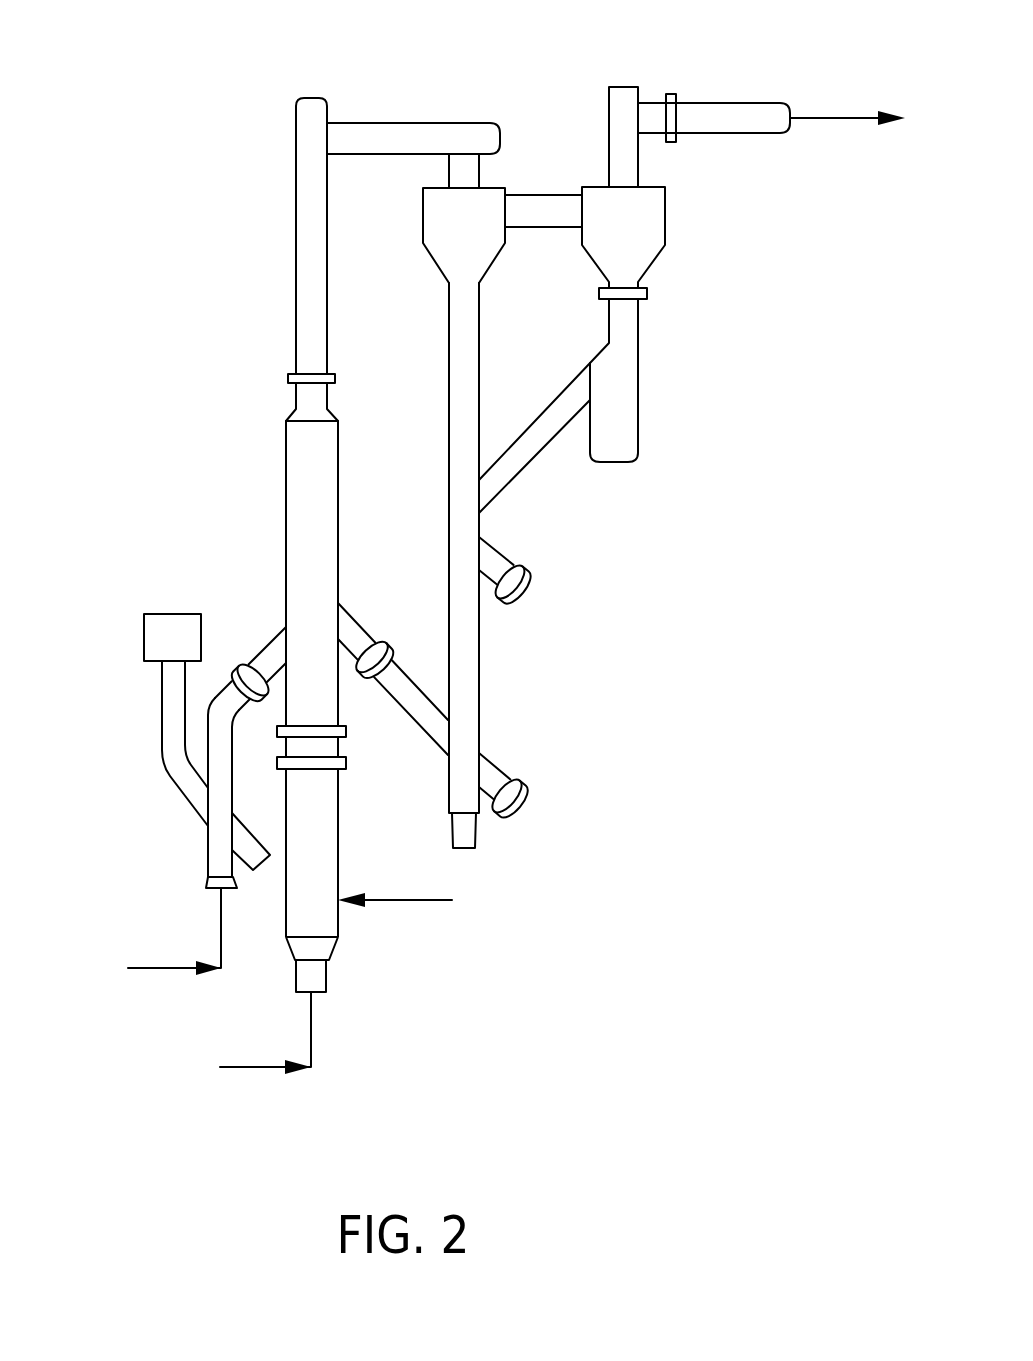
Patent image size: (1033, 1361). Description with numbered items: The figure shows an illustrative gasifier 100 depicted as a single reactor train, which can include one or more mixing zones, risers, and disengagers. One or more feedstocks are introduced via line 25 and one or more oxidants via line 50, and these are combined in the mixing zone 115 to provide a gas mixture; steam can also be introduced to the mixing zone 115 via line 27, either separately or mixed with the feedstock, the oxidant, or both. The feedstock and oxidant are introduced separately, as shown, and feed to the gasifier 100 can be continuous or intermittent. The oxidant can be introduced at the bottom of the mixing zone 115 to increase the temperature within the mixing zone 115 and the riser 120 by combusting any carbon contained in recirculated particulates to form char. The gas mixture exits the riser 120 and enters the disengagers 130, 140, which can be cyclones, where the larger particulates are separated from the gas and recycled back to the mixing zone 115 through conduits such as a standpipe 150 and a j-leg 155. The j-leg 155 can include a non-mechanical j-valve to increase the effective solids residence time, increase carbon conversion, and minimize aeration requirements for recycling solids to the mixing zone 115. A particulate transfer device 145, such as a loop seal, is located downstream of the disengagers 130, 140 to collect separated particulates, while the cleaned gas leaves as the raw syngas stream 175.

The gasifier 100 is at (134, 119).
The mixing zone 115 is at (310, 496).
The riser 120 is at (312, 97).
The disengager 130 is at (480, 241).
The disengager 140 is at (665, 209).
The particulate transfer device 145 is at (613, 462).
The standpipe 150 is at (479, 667).
The j-leg 155 is at (398, 620).
The raw syngas stream 175 is at (843, 118).
The line 50 is at (152, 968).
The line 27 is at (387, 900).
The line 25 is at (242, 1068).